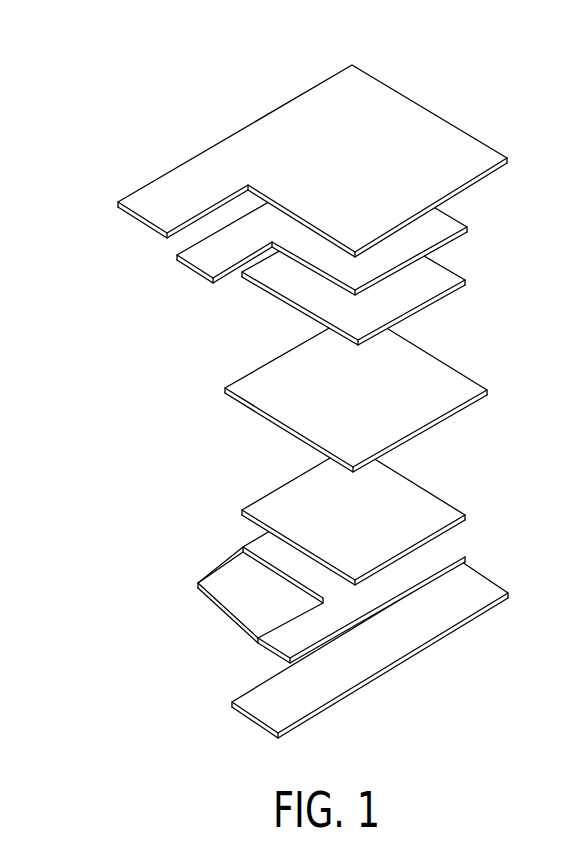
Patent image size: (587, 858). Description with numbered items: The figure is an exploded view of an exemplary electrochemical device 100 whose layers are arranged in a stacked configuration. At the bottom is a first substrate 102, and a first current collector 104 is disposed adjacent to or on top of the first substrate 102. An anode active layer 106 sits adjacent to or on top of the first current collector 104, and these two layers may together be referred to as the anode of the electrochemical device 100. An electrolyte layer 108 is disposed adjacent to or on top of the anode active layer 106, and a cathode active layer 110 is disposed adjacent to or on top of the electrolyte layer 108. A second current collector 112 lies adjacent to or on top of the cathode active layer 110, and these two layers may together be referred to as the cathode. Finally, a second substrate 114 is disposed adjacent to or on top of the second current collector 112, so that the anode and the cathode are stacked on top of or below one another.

The electrochemical device 100 is at (296, 375).
The first substrate 102 is at (468, 580).
The first current collector 104 is at (438, 552).
The anode active layer 106 is at (418, 500).
The electrolyte layer 108 is at (427, 368).
The cathode active layer 110 is at (440, 275).
The second current collector 112 is at (447, 222).
The second substrate 114 is at (435, 137).